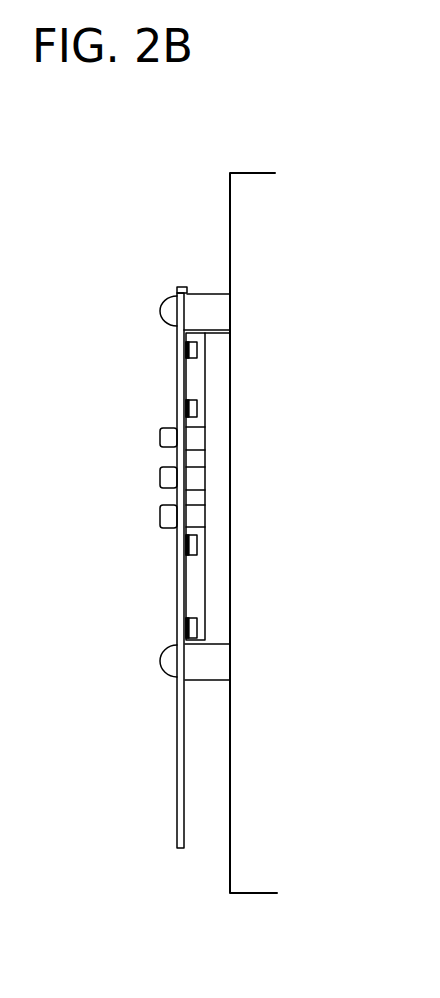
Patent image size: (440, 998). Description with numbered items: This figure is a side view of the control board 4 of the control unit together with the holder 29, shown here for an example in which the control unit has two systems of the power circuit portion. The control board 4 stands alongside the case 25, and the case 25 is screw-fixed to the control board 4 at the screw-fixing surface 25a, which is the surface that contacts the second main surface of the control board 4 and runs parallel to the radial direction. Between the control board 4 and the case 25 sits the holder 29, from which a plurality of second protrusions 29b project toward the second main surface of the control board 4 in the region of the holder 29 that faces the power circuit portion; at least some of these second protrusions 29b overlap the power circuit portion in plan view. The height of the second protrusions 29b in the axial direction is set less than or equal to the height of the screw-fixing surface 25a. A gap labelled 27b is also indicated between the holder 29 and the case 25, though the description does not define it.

The case 25 is at (257, 198).
The screw-fixing surface 25a is at (184, 289).
The holder 29 is at (217, 490).
The second protrusions 29b is at (192, 350).
The gap / space 27b is at (224, 589).
The control board 4 is at (179, 833).